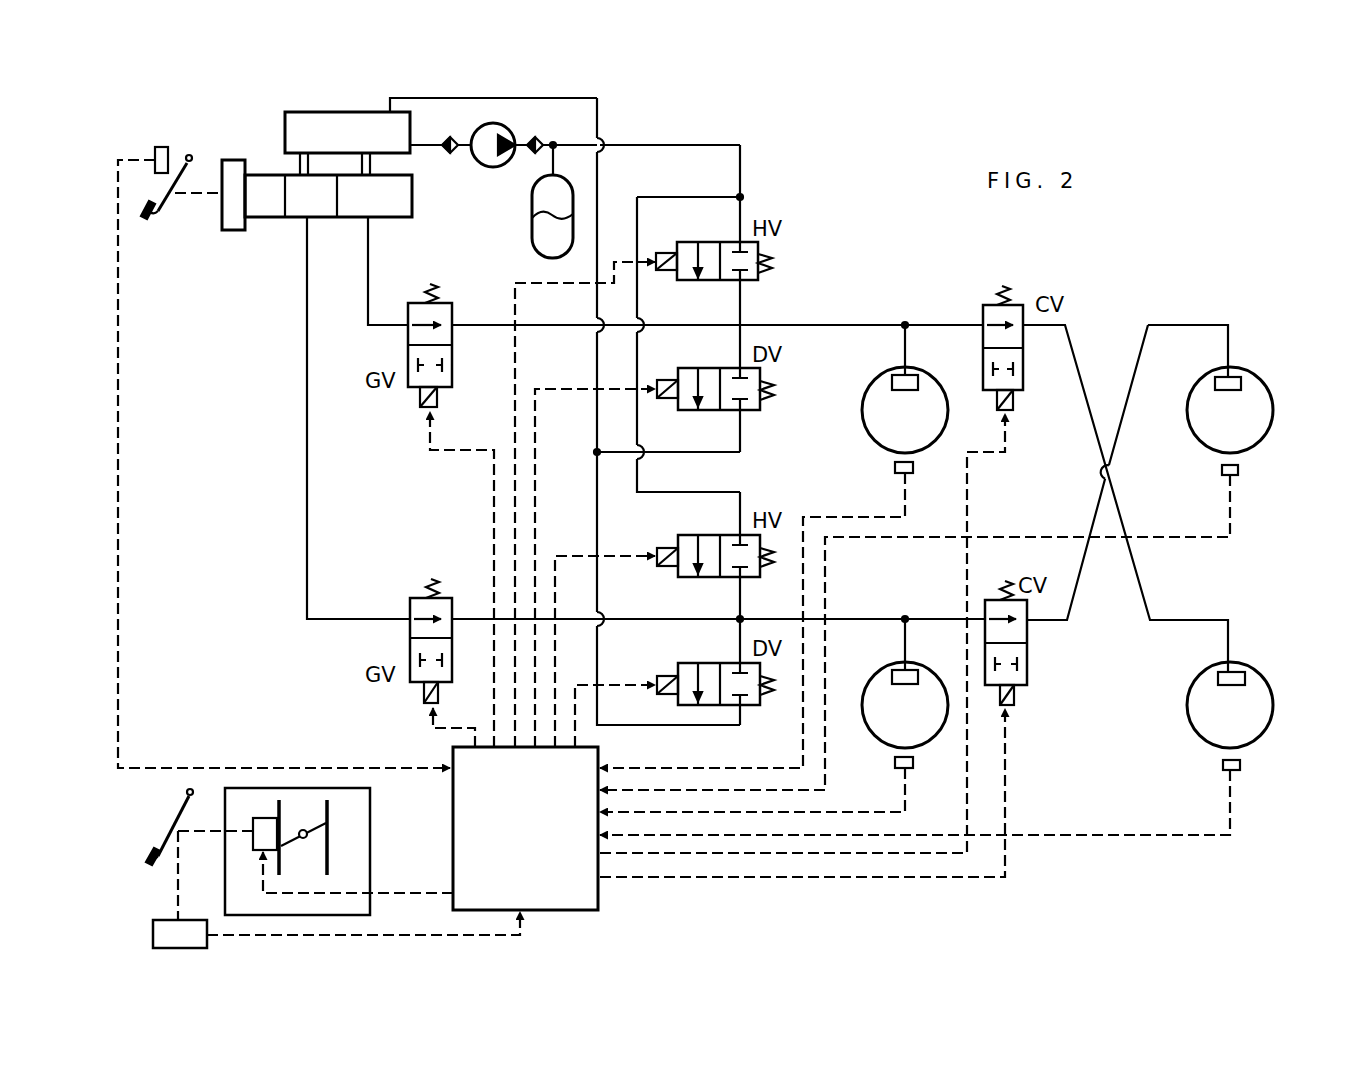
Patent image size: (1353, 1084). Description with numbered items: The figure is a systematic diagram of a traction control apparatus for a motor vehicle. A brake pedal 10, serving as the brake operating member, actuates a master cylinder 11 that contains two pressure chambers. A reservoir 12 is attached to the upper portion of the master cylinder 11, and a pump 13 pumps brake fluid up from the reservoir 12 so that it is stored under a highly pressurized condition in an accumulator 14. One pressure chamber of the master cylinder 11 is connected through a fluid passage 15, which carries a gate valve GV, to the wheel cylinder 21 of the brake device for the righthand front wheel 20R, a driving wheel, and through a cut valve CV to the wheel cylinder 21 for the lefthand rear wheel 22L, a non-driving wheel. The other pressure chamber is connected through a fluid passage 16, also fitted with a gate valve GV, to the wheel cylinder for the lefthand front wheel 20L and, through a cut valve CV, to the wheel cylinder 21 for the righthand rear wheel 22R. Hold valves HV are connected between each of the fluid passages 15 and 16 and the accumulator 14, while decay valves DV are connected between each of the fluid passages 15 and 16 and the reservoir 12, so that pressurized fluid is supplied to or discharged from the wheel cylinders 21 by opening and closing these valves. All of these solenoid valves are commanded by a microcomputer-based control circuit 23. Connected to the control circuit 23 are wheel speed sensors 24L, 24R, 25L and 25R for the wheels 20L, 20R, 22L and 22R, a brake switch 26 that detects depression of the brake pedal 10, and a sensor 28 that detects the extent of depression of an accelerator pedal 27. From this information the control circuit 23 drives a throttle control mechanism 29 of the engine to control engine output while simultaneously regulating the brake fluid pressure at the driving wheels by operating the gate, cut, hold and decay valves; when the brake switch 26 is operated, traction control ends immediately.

The brake pedal 10 is at (166, 214).
The master cylinder 11 is at (412, 190).
The reservoir 12 is at (285, 133).
The pump 13 is at (479, 127).
The accumulator 14 is at (532, 232).
The fluid passage 15 is at (576, 327).
The fluid passage 16 is at (584, 618).
The righthand front wheel 20R is at (879, 455).
The lefthand front wheel 20L is at (870, 726).
The wheel cylinder 21 is at (892, 380).
The righthand rear wheel 22R is at (1270, 430).
The lefthand rear wheel 22L is at (1270, 726).
The control circuit 23 is at (600, 752).
The wheel speed sensor 24R is at (913, 468).
The wheel speed sensor 24L is at (913, 763).
The wheel speed sensor 25R is at (1238, 470).
The wheel speed sensor 25L is at (1240, 765).
The brake switch 26 is at (162, 147).
The accelerator pedal 27 is at (174, 826).
The sensor 28 is at (163, 920).
The throttle control mechanism 29 is at (265, 818).